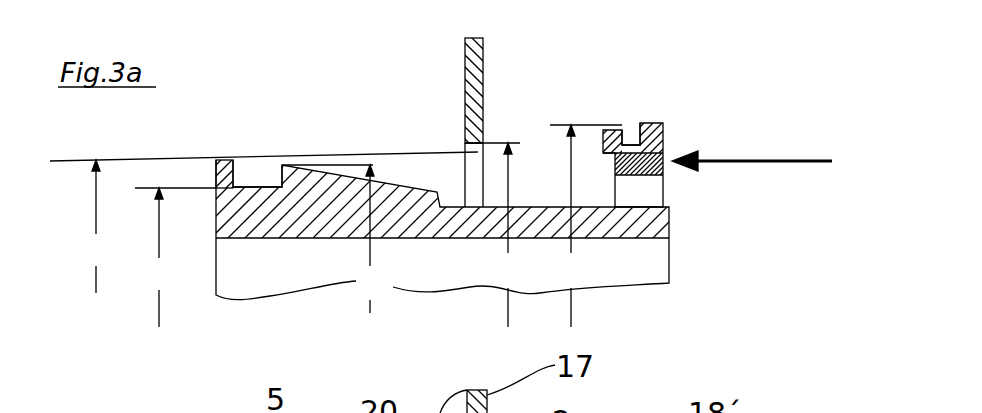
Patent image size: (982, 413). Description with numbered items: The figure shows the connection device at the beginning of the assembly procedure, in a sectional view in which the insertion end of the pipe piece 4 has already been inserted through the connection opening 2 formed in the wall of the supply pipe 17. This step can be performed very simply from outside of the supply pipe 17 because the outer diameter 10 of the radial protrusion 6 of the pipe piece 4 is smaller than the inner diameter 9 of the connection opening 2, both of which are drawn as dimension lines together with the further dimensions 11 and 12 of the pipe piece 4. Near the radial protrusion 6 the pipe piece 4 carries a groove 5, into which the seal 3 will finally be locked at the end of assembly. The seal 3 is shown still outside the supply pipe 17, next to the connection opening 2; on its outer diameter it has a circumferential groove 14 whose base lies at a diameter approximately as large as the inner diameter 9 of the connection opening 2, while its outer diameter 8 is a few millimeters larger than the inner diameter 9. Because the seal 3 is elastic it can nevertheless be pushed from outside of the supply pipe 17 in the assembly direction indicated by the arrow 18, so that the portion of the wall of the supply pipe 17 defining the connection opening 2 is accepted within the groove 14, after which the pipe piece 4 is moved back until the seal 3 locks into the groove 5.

The connection opening 2 is at (470, 172).
The seal 3 is at (652, 125).
The pipe piece 4 is at (650, 218).
The groove 5 is at (265, 183).
The radial protrusion 6 is at (223, 168).
The outer diameter of seal 8 is at (586, 226).
The inner diameter of connection opening 9 is at (492, 235).
The outer diameter of radial protrusion 10 is at (264, 222).
The height dimension 11 is at (175, 257).
The height dimension 12 is at (337, 239).
The circumferential groove 14 is at (633, 141).
The supply pipe 17 is at (480, 78).
The arrow 18 is at (693, 147).